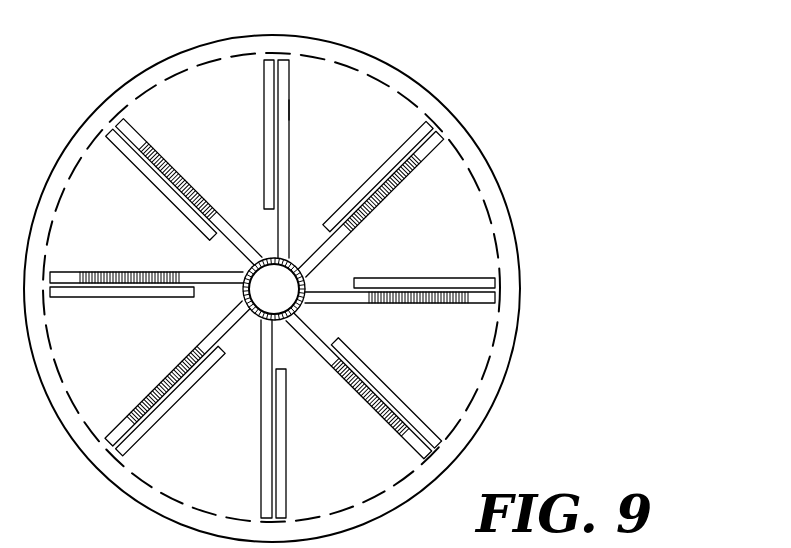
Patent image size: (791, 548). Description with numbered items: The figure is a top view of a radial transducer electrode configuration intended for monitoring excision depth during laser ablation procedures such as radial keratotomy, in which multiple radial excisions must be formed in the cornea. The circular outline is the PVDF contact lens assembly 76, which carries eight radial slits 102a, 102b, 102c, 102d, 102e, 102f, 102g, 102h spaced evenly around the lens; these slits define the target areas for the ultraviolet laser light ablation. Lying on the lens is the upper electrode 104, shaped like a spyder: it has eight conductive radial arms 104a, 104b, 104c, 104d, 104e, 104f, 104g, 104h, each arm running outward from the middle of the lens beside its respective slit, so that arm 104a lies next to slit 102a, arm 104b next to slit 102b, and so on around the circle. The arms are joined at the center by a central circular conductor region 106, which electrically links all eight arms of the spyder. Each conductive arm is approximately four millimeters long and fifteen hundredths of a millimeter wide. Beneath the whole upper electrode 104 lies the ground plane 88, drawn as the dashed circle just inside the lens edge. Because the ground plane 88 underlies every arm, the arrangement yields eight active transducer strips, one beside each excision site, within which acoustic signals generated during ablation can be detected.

The PVDF contact lens assembly 76 is at (350, 41).
The ground plane 88 is at (418, 106).
The central circular conductor region 106 is at (310, 278).
The upper electrode 104 is at (289, 110).
The radial slit 102a is at (264, 121).
The radial slit 102b is at (370, 179).
The radial slit 102c is at (386, 279).
The radial slit 102d is at (380, 383).
The radial slit 102e is at (290, 467).
The radial slit 102f is at (150, 428).
The radial slit 102g is at (152, 297).
The radial slit 102h is at (160, 183).
The conductive radial arm 104a is at (289, 148).
The conductive radial arm 104b is at (372, 207).
The conductive radial arm 104c is at (445, 305).
The conductive radial arm 104d is at (372, 411).
The conductive radial arm 104e is at (263, 408).
The conductive radial arm 104f is at (172, 370).
The conductive radial arm 104g is at (150, 273).
The conductive radial arm 104h is at (173, 157).